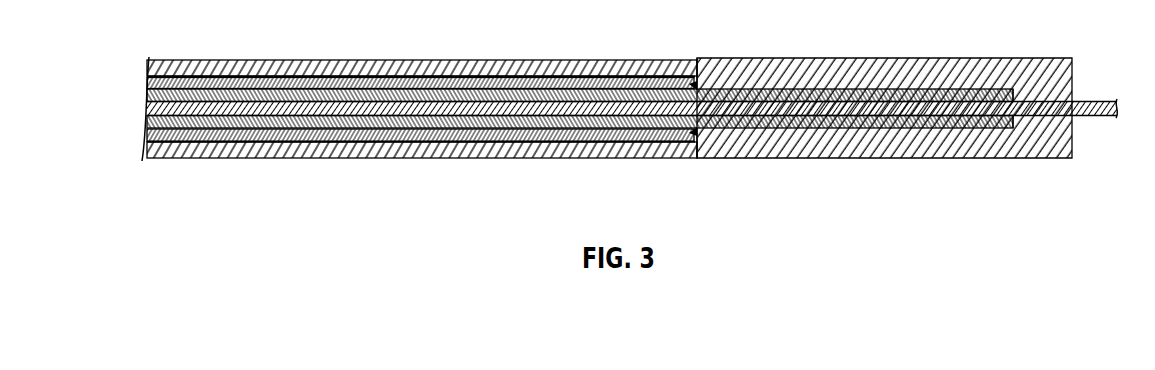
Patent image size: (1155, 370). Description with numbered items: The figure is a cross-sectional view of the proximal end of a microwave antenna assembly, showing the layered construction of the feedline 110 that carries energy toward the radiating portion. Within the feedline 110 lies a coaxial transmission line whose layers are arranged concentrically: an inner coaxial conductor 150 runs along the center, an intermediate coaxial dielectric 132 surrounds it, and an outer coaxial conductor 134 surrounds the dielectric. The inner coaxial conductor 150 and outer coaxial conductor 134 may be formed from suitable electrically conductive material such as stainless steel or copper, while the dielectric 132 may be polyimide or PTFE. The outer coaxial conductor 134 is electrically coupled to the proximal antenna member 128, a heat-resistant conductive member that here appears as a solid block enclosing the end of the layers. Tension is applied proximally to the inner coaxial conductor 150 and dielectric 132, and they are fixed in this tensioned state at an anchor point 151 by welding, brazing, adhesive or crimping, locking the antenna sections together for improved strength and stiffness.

The feedline 110 is at (566, 65).
The proximal antenna member 128 is at (430, 79).
The intermediate coaxial dielectric 132 is at (357, 96).
The outer coaxial conductor 134 is at (248, 74).
The inner coaxial conductor 150 is at (1033, 103).
The anchor point 151 is at (702, 70).